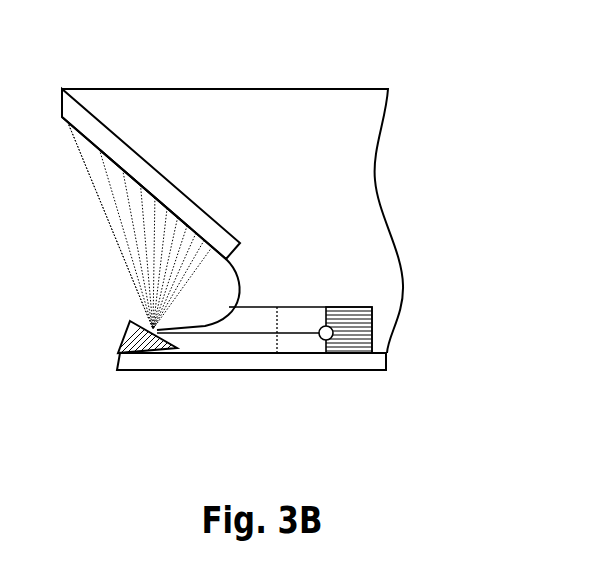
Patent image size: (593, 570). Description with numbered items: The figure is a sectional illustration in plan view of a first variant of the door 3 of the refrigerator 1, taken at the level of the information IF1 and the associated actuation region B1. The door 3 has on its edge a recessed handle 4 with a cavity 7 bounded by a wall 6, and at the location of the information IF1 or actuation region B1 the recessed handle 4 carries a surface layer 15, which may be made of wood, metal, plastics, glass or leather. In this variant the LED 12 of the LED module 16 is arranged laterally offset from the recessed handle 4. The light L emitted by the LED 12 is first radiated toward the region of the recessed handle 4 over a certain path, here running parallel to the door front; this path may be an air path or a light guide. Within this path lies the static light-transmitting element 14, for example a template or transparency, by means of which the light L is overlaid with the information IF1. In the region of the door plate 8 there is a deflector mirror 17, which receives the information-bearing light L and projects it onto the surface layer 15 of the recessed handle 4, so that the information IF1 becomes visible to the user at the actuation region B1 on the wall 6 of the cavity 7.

The refrigerator 1 is at (232, 178).
The door 3 is at (331, 89).
The information IF1 is at (151, 131).
The actuation region B1 is at (117, 124).
The surface layer 15 is at (163, 192).
The LED module 16 is at (317, 236).
The wall 6 is at (238, 282).
The cavity 7 is at (197, 311).
The static light-transmitting element 14 is at (283, 320).
The LED 12 is at (373, 322).
The recessed handle 4 is at (84, 233).
The light L is at (92, 176).
The deflector mirror 17 is at (145, 324).
The door plate 8 is at (294, 362).